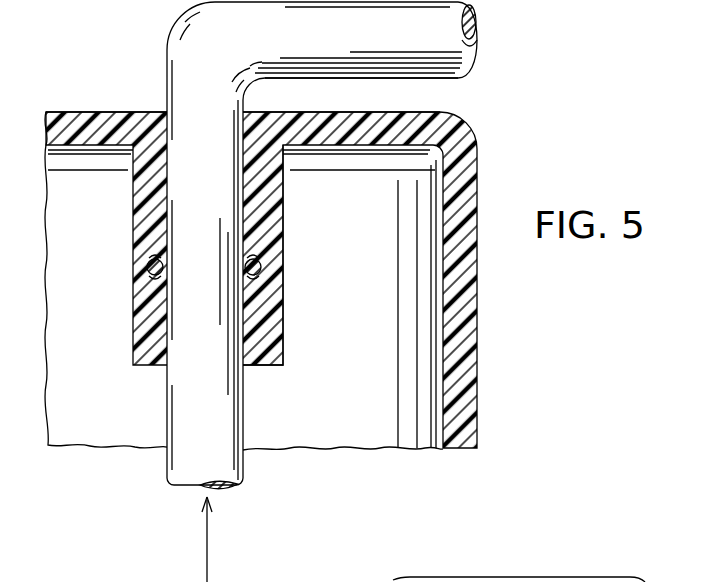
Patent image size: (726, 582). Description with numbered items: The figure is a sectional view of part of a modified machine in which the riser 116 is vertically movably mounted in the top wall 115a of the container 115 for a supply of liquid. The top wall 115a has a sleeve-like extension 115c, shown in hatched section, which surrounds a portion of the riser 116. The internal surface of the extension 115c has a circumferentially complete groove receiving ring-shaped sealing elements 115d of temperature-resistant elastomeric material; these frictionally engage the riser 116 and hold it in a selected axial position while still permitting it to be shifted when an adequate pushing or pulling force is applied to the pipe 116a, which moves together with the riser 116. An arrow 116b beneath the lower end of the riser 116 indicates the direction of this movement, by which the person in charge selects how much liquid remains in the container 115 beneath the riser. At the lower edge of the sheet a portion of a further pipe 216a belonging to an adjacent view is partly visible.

The container 115 is at (482, 364).
The top wall 115a is at (126, 118).
The sleeve-like extension 115c is at (271, 333).
The ring-shaped sealing element 115d is at (262, 266).
The riser 116 is at (241, 408).
The pipe 116a is at (405, 78).
The lower pipe end 116b is at (207, 557).
The pipe section of second embodiment 216a is at (517, 580).